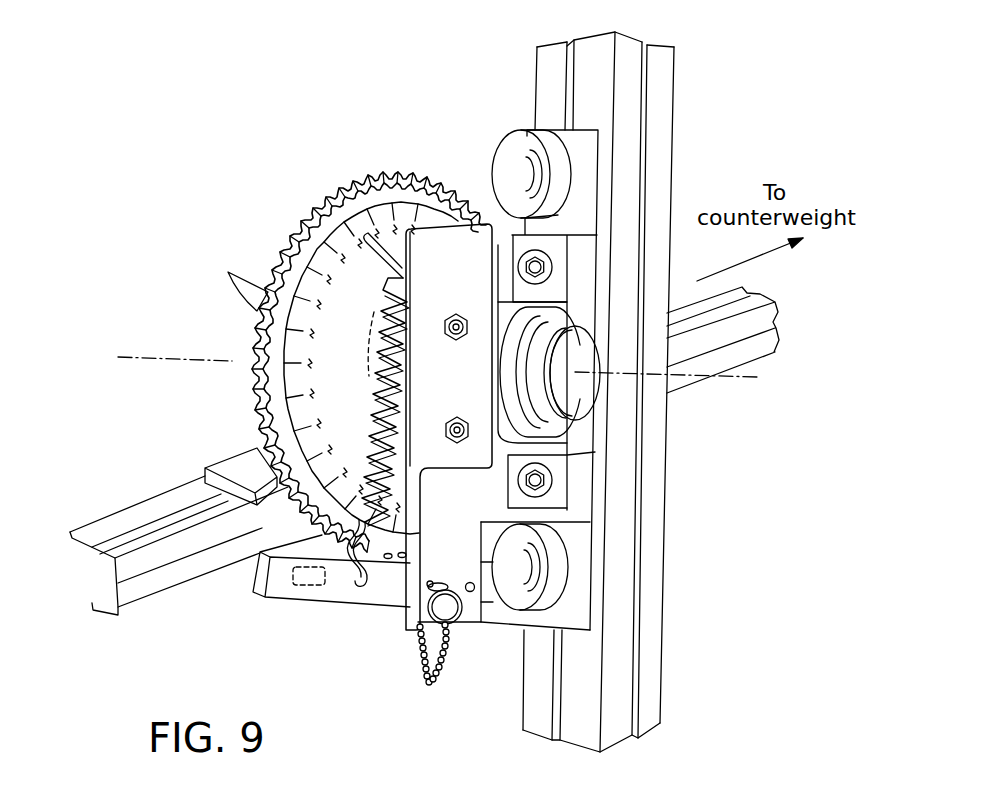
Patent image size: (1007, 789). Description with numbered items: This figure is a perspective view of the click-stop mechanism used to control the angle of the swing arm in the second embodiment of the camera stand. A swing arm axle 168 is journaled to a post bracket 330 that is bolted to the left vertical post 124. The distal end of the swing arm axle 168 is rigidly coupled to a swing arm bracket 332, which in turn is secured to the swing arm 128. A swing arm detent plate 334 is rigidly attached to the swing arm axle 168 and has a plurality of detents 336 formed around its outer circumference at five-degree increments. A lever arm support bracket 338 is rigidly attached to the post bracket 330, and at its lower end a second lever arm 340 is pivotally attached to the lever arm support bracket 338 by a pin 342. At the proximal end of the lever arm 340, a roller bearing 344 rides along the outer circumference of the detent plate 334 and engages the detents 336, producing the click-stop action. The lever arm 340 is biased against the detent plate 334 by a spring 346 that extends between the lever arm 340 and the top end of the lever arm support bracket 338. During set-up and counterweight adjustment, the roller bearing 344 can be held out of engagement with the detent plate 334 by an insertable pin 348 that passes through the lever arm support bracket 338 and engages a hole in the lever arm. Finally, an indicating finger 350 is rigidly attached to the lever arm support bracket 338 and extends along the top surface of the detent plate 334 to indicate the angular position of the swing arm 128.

The left vertical post 124 is at (660, 657).
The swing arm 128 is at (160, 602).
The swing arm axle 168 is at (592, 394).
The post bracket 330 is at (583, 490).
The swing arm bracket 332 is at (207, 458).
The swing arm detent plate 334 is at (253, 397).
The detents 336 is at (230, 266).
The lever arm support bracket 338 is at (447, 242).
The second lever arm 340 is at (377, 600).
The pin 342 is at (479, 590).
The roller bearing 344 is at (309, 587).
The spring 346 is at (400, 433).
The insertable pin 348 is at (440, 572).
The indicating finger 350 is at (374, 226).